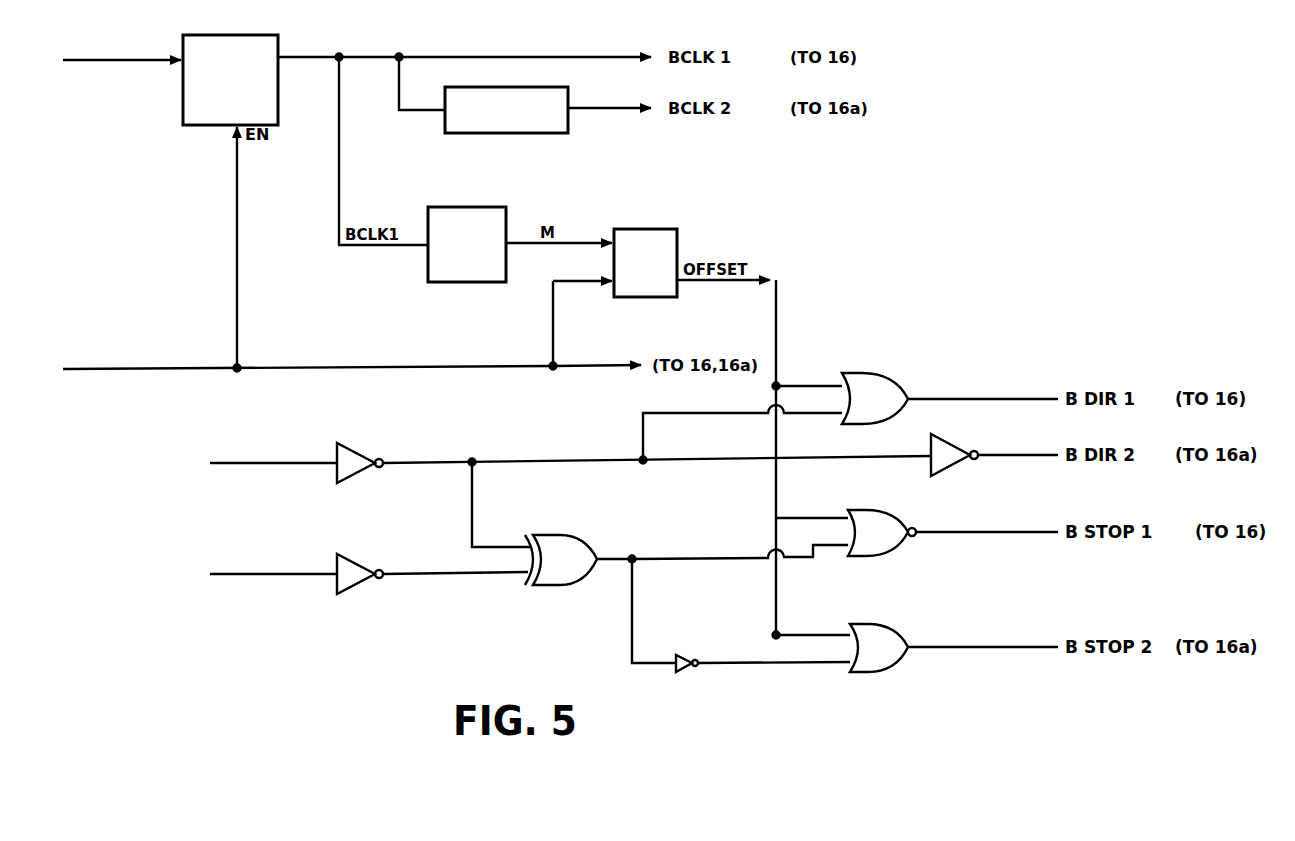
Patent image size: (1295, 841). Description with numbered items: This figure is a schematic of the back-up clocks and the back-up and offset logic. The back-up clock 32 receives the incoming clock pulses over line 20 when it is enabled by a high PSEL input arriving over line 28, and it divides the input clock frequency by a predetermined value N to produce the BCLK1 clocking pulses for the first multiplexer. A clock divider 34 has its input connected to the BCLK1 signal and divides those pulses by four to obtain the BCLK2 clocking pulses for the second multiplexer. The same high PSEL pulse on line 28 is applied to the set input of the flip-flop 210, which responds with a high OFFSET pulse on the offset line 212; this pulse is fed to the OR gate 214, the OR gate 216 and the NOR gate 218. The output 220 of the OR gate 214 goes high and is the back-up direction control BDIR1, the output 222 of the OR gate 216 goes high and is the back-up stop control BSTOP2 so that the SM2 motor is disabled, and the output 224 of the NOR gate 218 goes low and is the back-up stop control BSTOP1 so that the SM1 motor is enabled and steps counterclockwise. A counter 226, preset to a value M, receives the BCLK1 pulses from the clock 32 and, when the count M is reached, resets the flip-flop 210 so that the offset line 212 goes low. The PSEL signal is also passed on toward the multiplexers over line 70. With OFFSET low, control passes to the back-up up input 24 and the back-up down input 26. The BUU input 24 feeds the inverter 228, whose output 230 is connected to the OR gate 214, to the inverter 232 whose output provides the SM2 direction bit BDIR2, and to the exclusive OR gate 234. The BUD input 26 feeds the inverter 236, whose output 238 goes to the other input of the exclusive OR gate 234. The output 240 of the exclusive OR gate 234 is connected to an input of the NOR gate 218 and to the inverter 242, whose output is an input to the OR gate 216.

The clock input line 20 is at (90, 63).
The back-up clock 32 is at (246, 35).
The clock divider 34 is at (545, 133).
The counter 226 is at (492, 194).
The flip-flop 210 is at (678, 230).
The OFFSET line 212 is at (778, 300).
The PSEL line 28 is at (120, 371).
The PSEL output line 70 is at (562, 362).
The back-up up (BUU) input 24 is at (254, 462).
The inverter 228 is at (366, 427).
The inverter output 230 is at (424, 462).
The OR gate 214 is at (892, 378).
The output of OR gate 214 220 is at (992, 398).
The inverter 232 is at (970, 428).
The NOR gate 218 is at (890, 510).
The output of NOR gate 218 224 is at (984, 531).
The back-up down (BUD) input 26 is at (245, 573).
The inverter 236 is at (352, 594).
The inverter output 238 is at (434, 576).
The exclusive OR gate 234 is at (578, 526).
The output of exclusive OR gate 234 240 is at (608, 557).
The inverter 242 is at (688, 672).
The OR gate 216 is at (884, 626).
The output of OR gate 216 222 is at (984, 646).